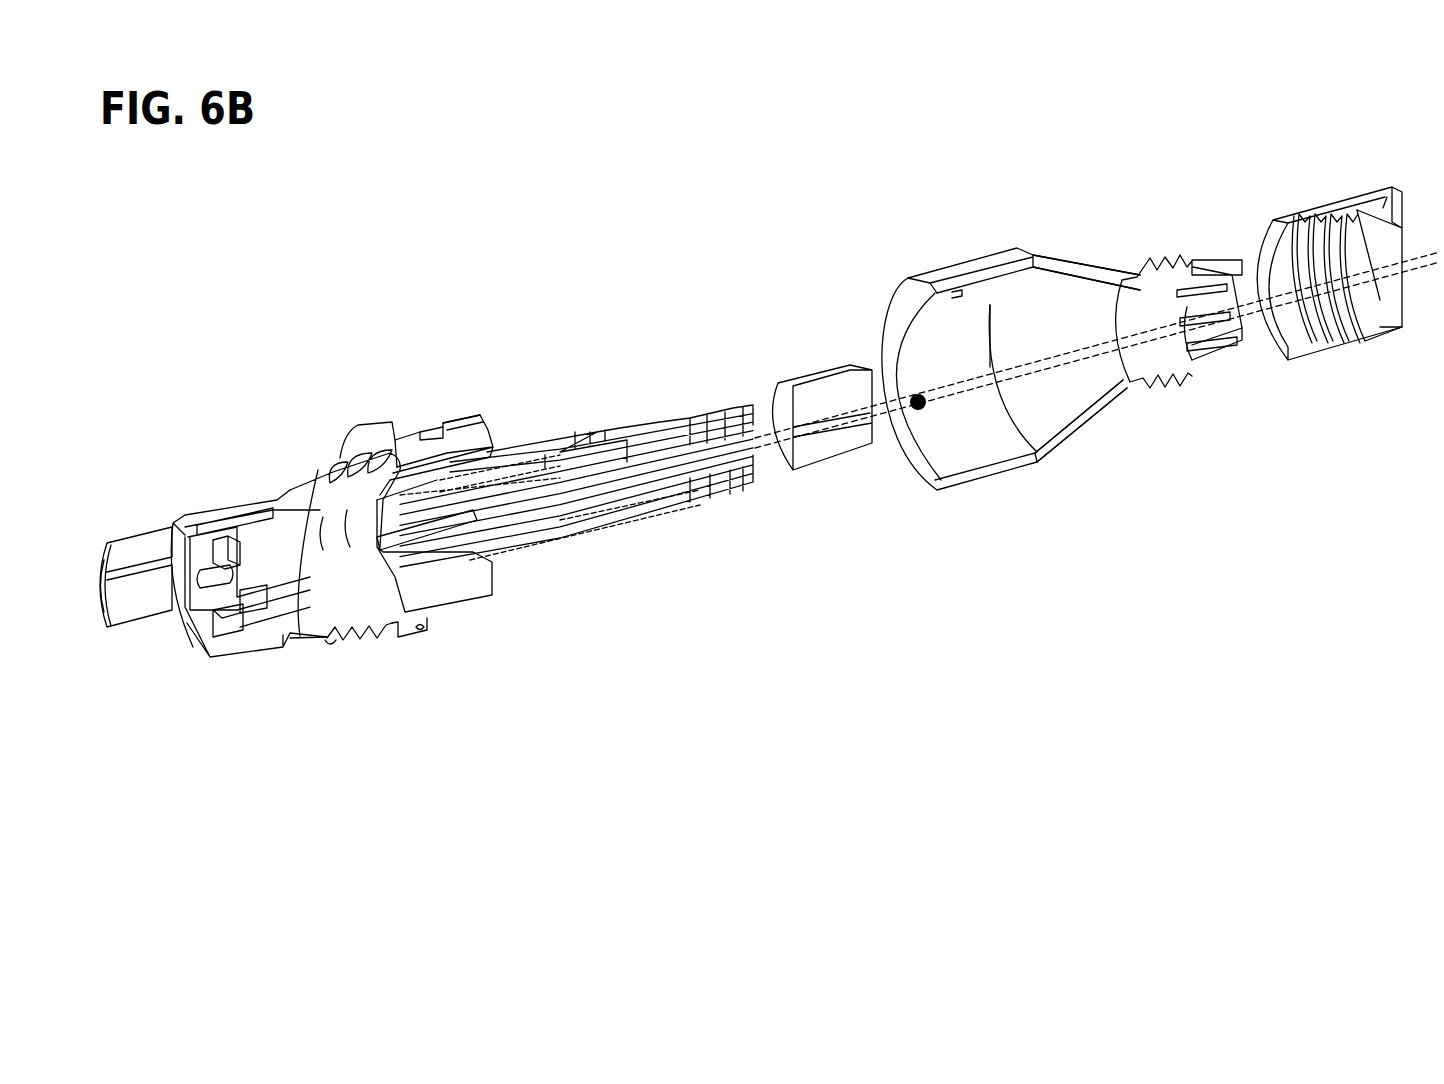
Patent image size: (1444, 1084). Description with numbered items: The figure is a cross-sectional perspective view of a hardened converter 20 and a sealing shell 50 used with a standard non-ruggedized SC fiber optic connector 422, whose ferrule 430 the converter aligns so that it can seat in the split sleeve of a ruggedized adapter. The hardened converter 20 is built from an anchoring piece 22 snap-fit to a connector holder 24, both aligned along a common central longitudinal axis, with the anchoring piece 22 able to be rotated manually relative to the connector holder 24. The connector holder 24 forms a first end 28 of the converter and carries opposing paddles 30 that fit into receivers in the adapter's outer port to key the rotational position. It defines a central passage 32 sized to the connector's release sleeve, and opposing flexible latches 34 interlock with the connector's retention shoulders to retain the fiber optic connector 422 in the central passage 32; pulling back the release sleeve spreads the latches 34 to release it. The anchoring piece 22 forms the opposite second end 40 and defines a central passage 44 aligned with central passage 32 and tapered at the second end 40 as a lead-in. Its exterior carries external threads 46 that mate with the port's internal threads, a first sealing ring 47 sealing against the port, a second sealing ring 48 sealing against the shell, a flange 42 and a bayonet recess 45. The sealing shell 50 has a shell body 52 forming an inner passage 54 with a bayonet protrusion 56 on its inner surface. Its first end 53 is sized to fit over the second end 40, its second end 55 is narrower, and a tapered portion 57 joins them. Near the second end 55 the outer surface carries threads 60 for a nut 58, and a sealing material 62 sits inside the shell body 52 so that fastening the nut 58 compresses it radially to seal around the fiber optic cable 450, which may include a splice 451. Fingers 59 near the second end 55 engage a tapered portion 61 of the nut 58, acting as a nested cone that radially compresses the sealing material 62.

The hardened converter 20 is at (408, 561).
The anchoring piece 22 is at (302, 490).
The connector holder 24 is at (218, 505).
The first end 28 is at (105, 592).
The opposing paddles 30 is at (148, 543).
The central passage 32 is at (212, 601).
The opposing flexible latches 34 is at (220, 614).
The second end 40 is at (490, 428).
The flange 42 is at (407, 634).
The central passage 44 is at (472, 583).
The bayonet recess 45 is at (445, 430).
The external threads 46 is at (364, 640).
The first sealing ring 47 is at (328, 648).
The second sealing ring 48 is at (425, 432).
The sealing shell 50 is at (1097, 346).
The shell body 52 is at (961, 387).
The first end 53 is at (888, 304).
The inner passage 54 is at (937, 347).
The second end 55 is at (1243, 340).
The bayonet protrusion 56 is at (953, 293).
The tapered portion 57 is at (1103, 408).
The nut 58 is at (1345, 286).
The fingers 59 is at (1202, 333).
The threads 60 is at (1158, 262).
The tapered portion 61 is at (1382, 297).
The sealing material 62 is at (828, 462).
The fiber optic connector 422 is at (575, 540).
The ferrule 430 is at (395, 550).
The fiber optic cable 450 is at (1060, 367).
The splice 451 is at (920, 406).